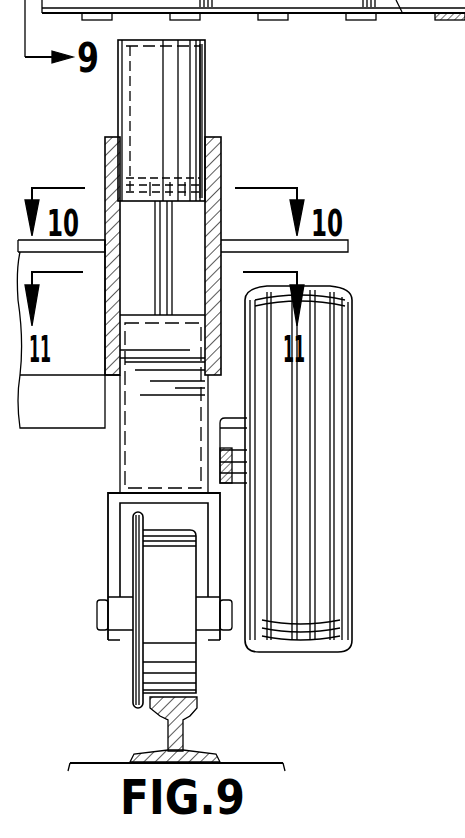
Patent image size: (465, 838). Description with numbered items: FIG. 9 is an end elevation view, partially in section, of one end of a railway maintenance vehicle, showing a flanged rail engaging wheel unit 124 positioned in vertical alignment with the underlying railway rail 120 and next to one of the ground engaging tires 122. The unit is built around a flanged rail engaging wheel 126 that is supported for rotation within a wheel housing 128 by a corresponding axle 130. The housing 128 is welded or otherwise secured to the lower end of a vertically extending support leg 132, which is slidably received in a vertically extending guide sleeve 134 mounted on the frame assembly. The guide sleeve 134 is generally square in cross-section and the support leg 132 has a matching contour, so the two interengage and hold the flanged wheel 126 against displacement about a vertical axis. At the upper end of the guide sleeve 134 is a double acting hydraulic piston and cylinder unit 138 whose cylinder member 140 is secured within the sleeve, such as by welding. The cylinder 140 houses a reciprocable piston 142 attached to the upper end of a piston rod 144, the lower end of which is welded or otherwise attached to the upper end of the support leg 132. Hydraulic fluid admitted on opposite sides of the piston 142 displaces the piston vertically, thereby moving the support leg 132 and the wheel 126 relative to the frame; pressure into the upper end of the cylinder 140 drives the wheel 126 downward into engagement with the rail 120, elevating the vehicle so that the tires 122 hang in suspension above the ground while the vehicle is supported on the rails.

The railway rail 120 is at (333, 22).
The ground engaging tire 122 is at (372, 298).
The flanged rail engaging wheel unit 124 is at (238, 124).
The flanged rail engaging wheel 126 is at (135, 678).
The wheel housing 128 is at (113, 503).
The axle 130 is at (100, 612).
The support leg 132 is at (145, 395).
The guide sleeve 134 is at (110, 278).
The double acting hydraulic piston and cylinder unit 138 is at (220, 92).
The cylinder member 140 is at (195, 68).
The piston 142 is at (190, 176).
The piston rod 144 is at (166, 243).